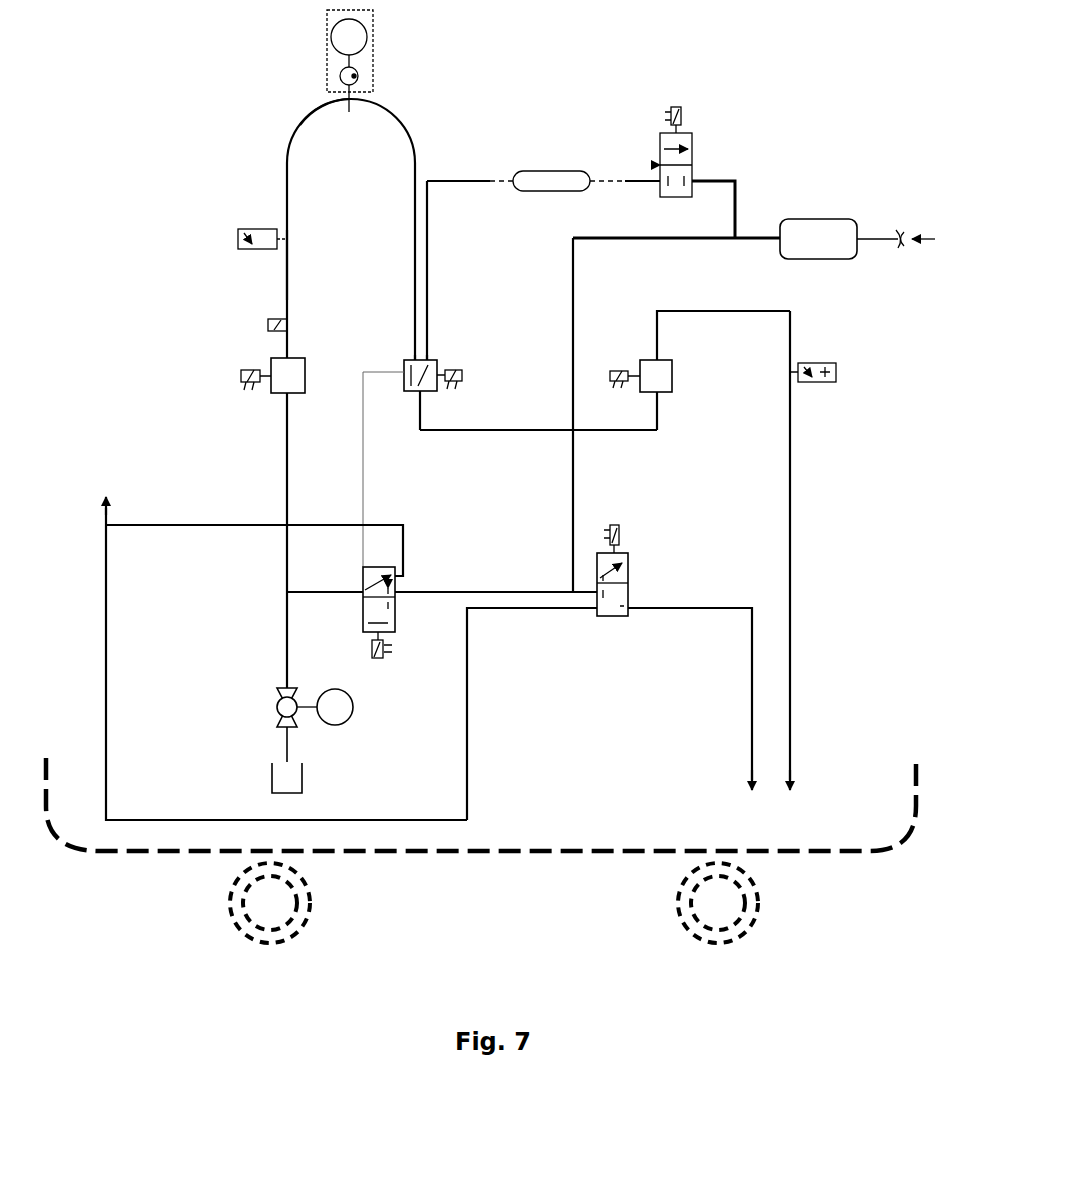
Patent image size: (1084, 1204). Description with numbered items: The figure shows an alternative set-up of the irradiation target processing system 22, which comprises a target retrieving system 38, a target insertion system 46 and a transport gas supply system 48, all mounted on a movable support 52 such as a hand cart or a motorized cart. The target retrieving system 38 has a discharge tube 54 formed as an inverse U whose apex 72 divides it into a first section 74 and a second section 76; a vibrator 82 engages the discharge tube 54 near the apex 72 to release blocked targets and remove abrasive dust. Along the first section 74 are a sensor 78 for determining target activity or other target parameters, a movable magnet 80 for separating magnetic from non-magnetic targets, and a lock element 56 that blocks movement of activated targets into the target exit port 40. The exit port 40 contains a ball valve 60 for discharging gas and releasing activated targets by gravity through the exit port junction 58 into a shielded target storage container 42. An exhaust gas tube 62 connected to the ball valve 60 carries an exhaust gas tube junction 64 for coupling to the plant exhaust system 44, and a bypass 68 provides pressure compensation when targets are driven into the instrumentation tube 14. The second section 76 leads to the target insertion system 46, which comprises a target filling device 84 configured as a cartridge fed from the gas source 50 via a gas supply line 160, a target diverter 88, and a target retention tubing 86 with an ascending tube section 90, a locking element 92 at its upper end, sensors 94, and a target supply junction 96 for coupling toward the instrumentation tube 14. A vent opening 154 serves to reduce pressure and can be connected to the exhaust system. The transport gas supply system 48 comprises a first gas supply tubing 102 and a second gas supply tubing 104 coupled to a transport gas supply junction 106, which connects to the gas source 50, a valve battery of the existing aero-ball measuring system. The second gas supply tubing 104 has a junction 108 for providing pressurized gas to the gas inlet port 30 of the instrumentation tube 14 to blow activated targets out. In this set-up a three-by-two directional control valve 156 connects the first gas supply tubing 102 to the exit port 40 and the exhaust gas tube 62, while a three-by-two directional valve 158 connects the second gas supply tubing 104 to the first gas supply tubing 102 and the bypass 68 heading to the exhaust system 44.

The target processing system 22 is at (188, 130).
The target retrieving system 38 is at (272, 197).
The discharge tube 54 is at (302, 120).
The first discharge tube section 74 is at (287, 270).
The second discharge tube section 76 is at (426, 243).
The vibrator 82 is at (327, 55).
The apex 72 is at (349, 112).
The sensor 78 is at (238, 240).
The magnet 80 is at (268, 326).
The lock element 56 is at (271, 386).
The target filling device 84 is at (545, 191).
The gas supply line 160 is at (742, 198).
The gas source 50 is at (769, 239).
The transport gas supply junction 106 is at (905, 230).
The target insertion system 46 is at (432, 302).
The target diverter 88 is at (432, 390).
The vent opening 154 is at (404, 372).
The target retention tubing 86 is at (495, 431).
The locking element 92 is at (662, 376).
The ascending tube section 90 is at (657, 420).
The target supply junction 96 is at (790, 735).
The instrumentation tube 14 is at (789, 808).
The sensors 94 is at (836, 375).
The transport gas supply system 48 is at (582, 500).
The exhaust gas tube 62 is at (185, 525).
The exhaust gas tube junction 64 is at (110, 500).
The exhaust system 44 is at (107, 478).
The target exit port 40 is at (287, 642).
The ball valve 60 is at (277, 705).
The exit port junction 58 is at (290, 745).
The target storage container 42 is at (300, 780).
The 3/2 directional control valve 156 is at (394, 632).
The first gas supply tubing 102 is at (487, 590).
The 3/2 directional valve 158 is at (628, 586).
The second gas supply tubing 104 is at (670, 608).
The junction 108 is at (752, 750).
The gas inlet port 30 is at (751, 808).
The bypass 68 is at (467, 730).
The movable support 52 is at (508, 852).